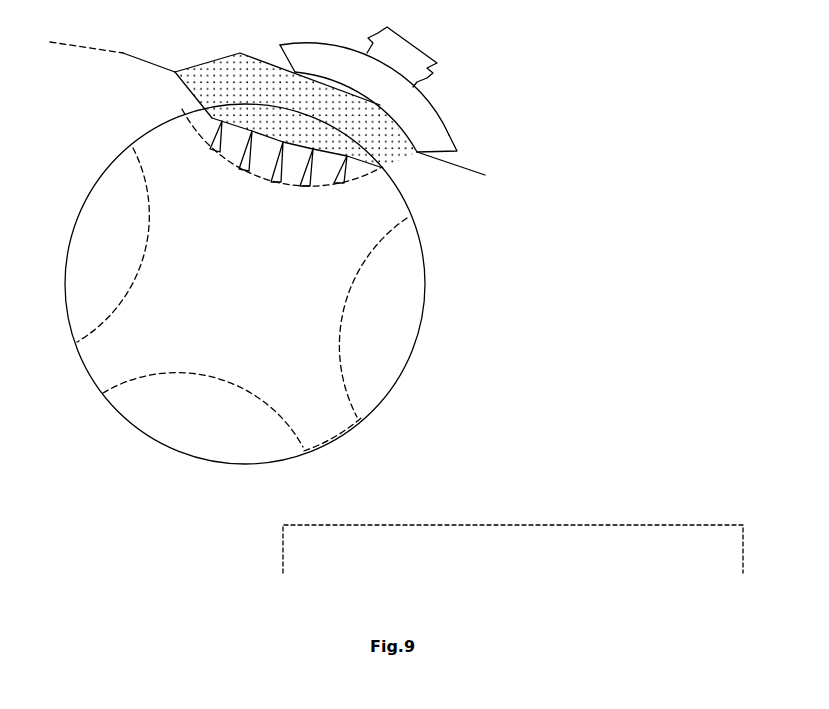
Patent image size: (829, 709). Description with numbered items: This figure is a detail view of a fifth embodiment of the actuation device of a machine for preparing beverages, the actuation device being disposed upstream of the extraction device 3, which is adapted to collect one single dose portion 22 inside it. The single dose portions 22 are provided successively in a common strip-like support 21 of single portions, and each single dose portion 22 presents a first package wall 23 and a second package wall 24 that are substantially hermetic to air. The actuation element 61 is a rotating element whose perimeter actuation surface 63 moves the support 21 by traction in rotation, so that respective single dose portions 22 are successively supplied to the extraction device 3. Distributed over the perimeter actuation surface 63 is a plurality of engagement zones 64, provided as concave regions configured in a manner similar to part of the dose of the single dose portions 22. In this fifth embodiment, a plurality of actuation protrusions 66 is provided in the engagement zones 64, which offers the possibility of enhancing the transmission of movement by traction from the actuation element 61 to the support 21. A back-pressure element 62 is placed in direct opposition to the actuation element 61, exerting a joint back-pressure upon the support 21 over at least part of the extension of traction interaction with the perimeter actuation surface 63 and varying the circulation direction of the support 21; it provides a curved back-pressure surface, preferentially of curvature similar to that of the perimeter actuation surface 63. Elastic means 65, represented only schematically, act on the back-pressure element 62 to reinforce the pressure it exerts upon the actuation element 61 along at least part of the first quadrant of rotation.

The extraction device 3 is at (513, 549).
The support of single portions 21 is at (86, 40).
The single dose portion 22 is at (149, 56).
The first package wall 23 is at (269, 120).
The second package wall 24 is at (277, 73).
The actuation element 61 is at (245, 284).
The back-pressure element 62 is at (382, 98).
The perimeter actuation surface 63 is at (142, 141).
The engagement zones 64 is at (142, 212).
The elastic means 65 is at (413, 57).
The actuation protrusions 66 is at (313, 168).